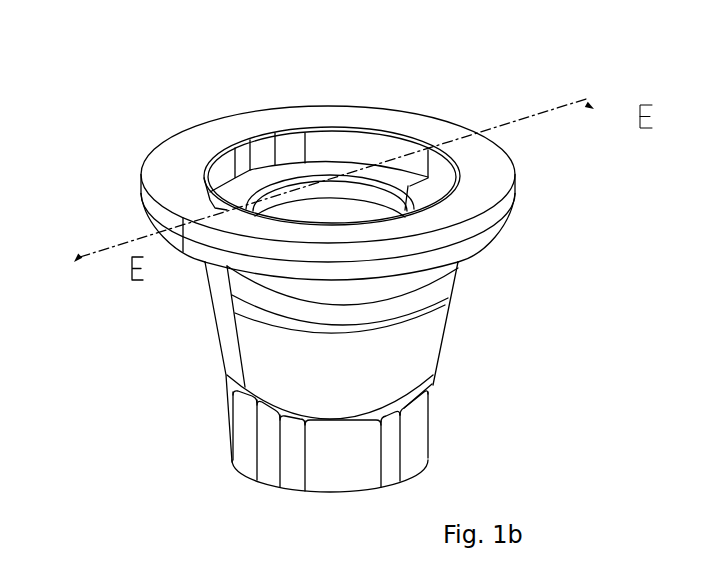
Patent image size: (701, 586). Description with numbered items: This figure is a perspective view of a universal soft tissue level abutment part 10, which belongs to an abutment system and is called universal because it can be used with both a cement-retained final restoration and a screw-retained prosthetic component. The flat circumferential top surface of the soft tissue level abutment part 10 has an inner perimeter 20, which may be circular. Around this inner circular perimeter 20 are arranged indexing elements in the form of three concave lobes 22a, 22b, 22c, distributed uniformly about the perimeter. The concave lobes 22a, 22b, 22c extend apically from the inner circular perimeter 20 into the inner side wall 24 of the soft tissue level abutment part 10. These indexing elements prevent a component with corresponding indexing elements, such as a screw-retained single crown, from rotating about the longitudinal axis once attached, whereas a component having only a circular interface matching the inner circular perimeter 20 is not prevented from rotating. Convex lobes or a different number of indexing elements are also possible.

The soft tissue level abutment part 10 is at (427, 353).
The inner perimeter 20 is at (378, 132).
The concave lobe 22a is at (255, 148).
The concave lobe 22b is at (440, 210).
The concave lobe 22c is at (227, 210).
The inner side wall 24 is at (328, 140).